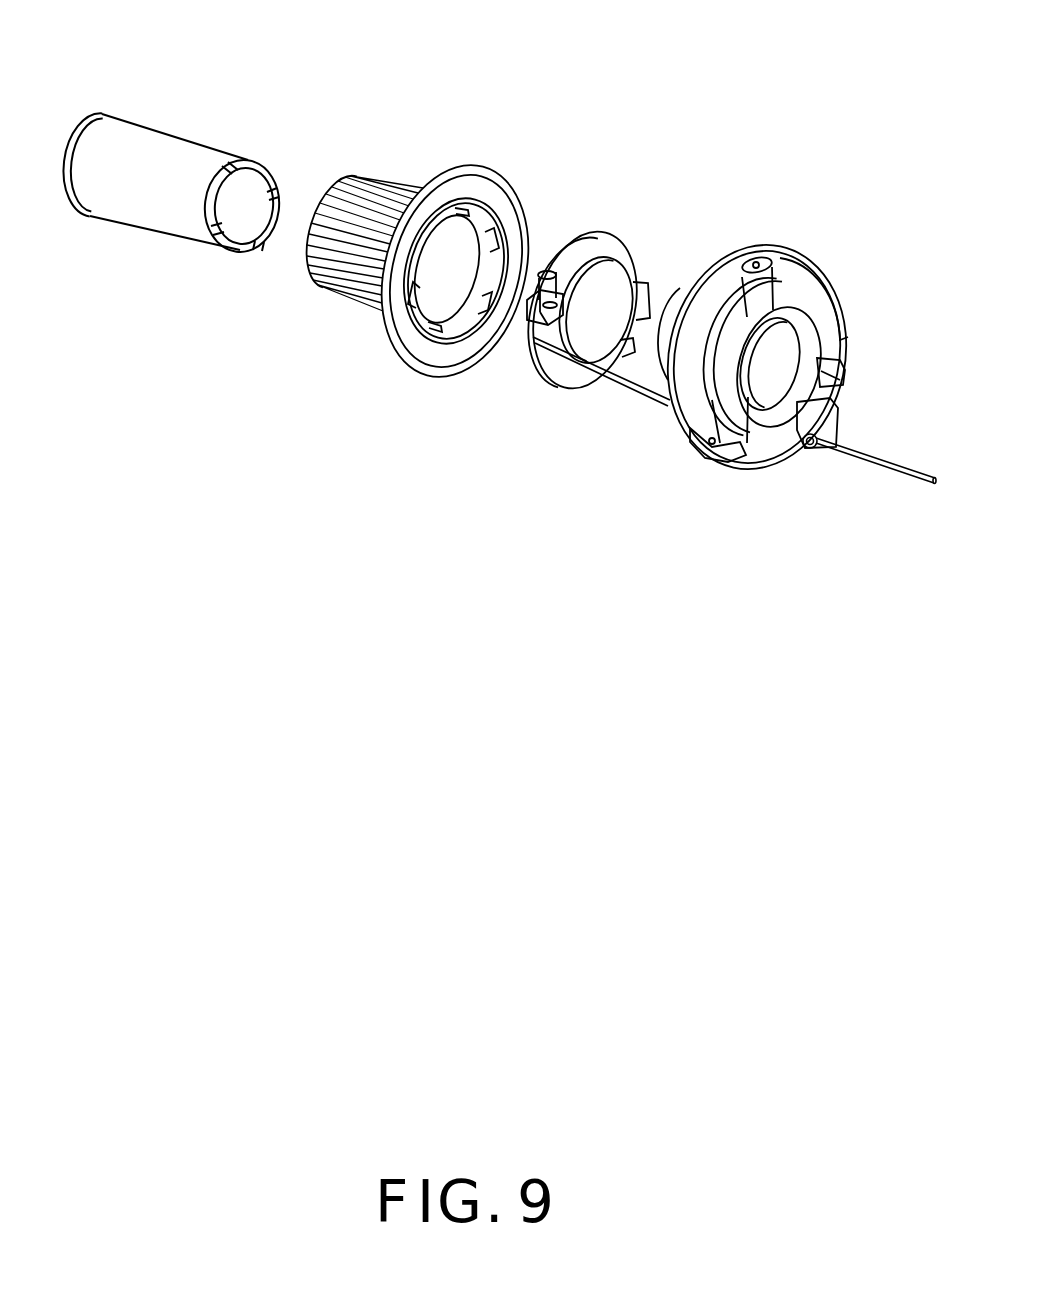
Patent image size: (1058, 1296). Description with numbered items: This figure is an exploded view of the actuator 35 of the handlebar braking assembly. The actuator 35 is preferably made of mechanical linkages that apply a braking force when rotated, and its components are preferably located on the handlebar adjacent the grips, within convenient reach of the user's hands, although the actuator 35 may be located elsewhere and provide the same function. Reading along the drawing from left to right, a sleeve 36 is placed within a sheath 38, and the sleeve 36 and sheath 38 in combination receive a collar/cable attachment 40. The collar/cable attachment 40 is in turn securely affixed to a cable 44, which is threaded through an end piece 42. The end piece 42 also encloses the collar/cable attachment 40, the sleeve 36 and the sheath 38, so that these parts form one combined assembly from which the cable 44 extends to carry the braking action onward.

The actuator 35 is at (675, 121).
The sleeve 36 is at (185, 245).
The sheath 38 is at (370, 318).
The collar/cable attachment 40 is at (554, 392).
The end piece 42 is at (712, 470).
The cable 44 is at (925, 490).